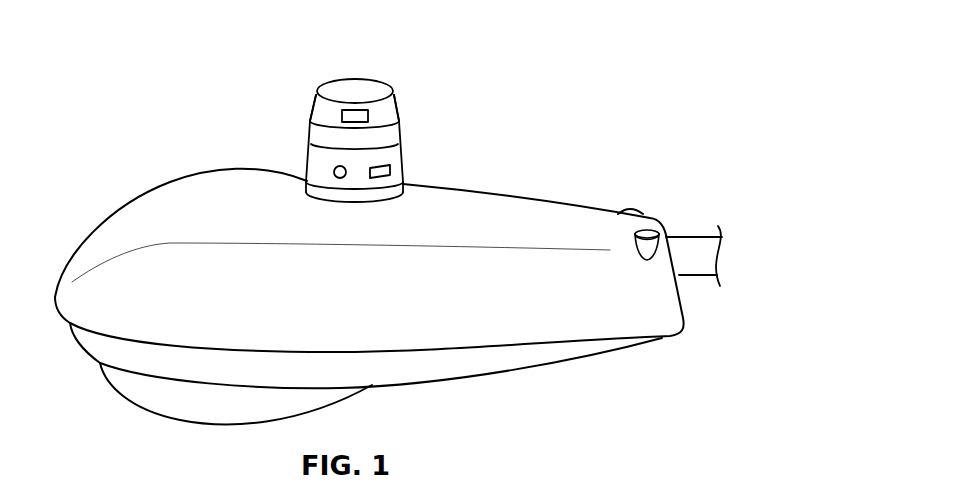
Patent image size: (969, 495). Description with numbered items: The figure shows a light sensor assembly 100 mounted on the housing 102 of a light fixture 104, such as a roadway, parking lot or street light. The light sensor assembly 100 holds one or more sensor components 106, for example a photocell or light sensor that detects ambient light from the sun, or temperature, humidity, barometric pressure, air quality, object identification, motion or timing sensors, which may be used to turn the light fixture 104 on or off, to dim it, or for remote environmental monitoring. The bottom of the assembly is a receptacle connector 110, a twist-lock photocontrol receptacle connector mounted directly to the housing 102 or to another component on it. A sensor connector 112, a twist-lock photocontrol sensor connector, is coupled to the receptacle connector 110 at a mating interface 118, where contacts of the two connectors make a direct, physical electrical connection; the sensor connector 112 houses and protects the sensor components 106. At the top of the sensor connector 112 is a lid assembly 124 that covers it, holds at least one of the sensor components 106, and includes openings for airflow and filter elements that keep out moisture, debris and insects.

The light sensor assembly 100 is at (312, 77).
The housing 102 is at (540, 242).
The light fixture 104 is at (497, 192).
The sensor components 106 is at (338, 163).
The receptacle connector 110 is at (317, 188).
The sensor connector 112 is at (327, 158).
The mating interface 118 is at (403, 176).
The lid assembly 124 is at (369, 116).